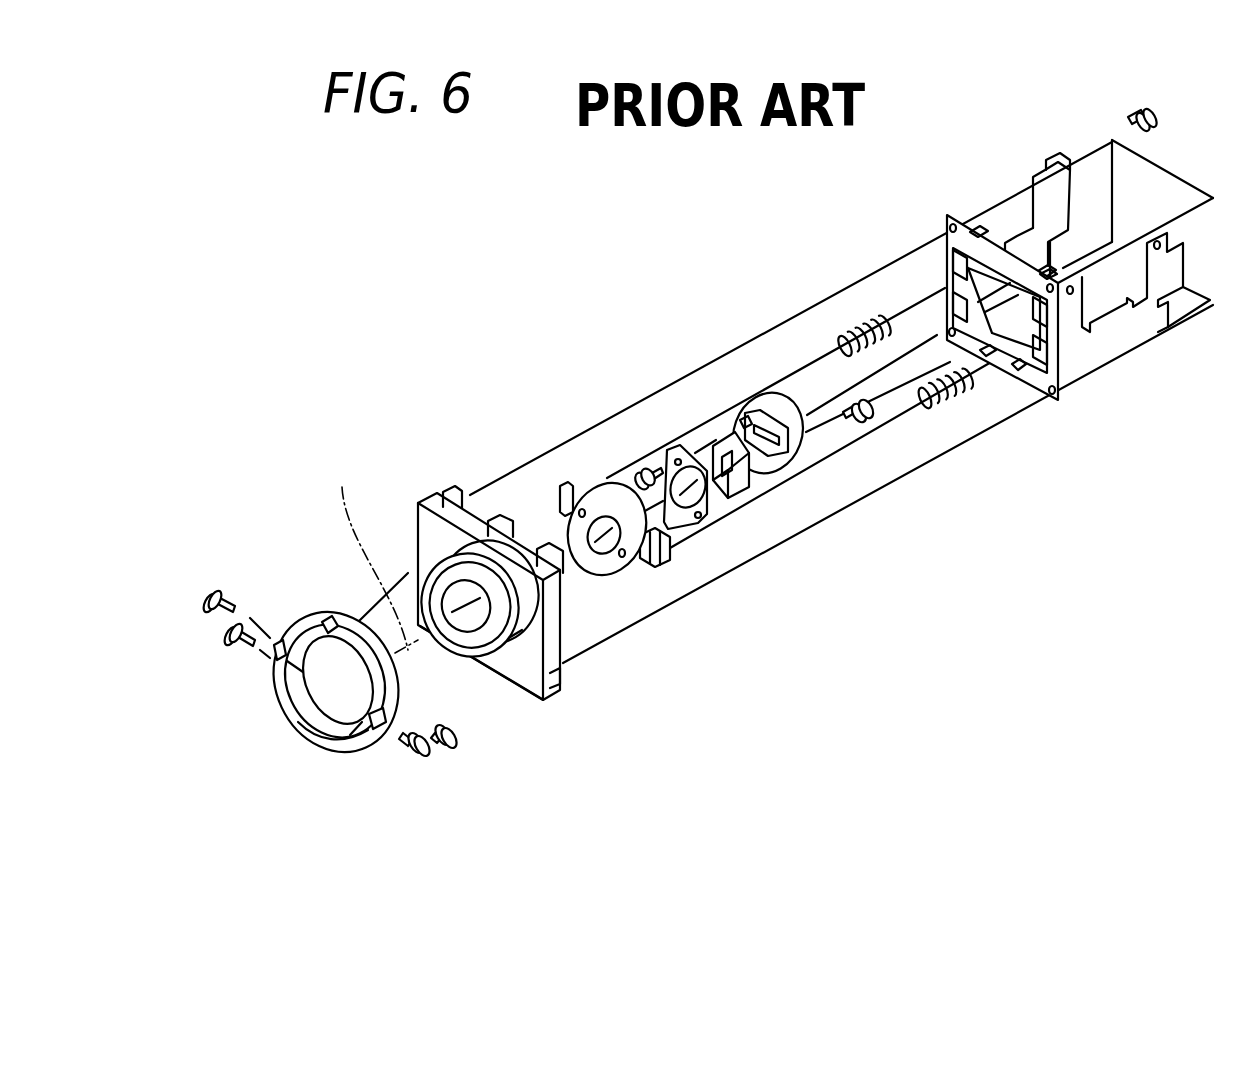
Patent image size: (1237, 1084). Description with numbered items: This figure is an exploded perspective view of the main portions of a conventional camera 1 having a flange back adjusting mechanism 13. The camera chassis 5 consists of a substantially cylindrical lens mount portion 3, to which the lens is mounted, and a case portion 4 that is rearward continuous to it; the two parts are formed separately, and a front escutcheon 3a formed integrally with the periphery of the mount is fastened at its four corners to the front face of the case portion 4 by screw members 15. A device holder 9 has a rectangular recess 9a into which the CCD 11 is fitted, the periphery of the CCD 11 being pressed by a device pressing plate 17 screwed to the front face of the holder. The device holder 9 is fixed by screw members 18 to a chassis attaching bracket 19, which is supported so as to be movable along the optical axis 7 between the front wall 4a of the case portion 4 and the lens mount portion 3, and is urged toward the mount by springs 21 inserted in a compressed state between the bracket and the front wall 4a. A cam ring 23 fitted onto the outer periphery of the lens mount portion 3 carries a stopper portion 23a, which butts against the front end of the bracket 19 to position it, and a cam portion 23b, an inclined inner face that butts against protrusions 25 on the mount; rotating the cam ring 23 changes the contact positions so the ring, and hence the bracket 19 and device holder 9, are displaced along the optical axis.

The lens unit 1 is at (571, 394).
The lens mount portion 3 is at (480, 655).
The front escutcheon 3a is at (533, 680).
The case portion 4 is at (1105, 348).
The front wall 4a is at (1042, 382).
The camera chassis 5 is at (560, 722).
The optical axis 7 is at (377, 553).
The device holder 9 is at (790, 472).
The rectangular recess 9a is at (767, 412).
The CCD 11 is at (731, 500).
The flange back adjusting mechanism 13 is at (365, 735).
The screw members 15 is at (1157, 108).
The device pressing plate 17 is at (683, 535).
The screw members 18 is at (653, 470).
The chassis attaching bracket 19 is at (610, 565).
The springs 21 is at (855, 332).
The cam ring 23 is at (340, 745).
The stopper portion 23a is at (320, 647).
The cam portion 23b is at (296, 708).
The protrusions 25 is at (203, 592).